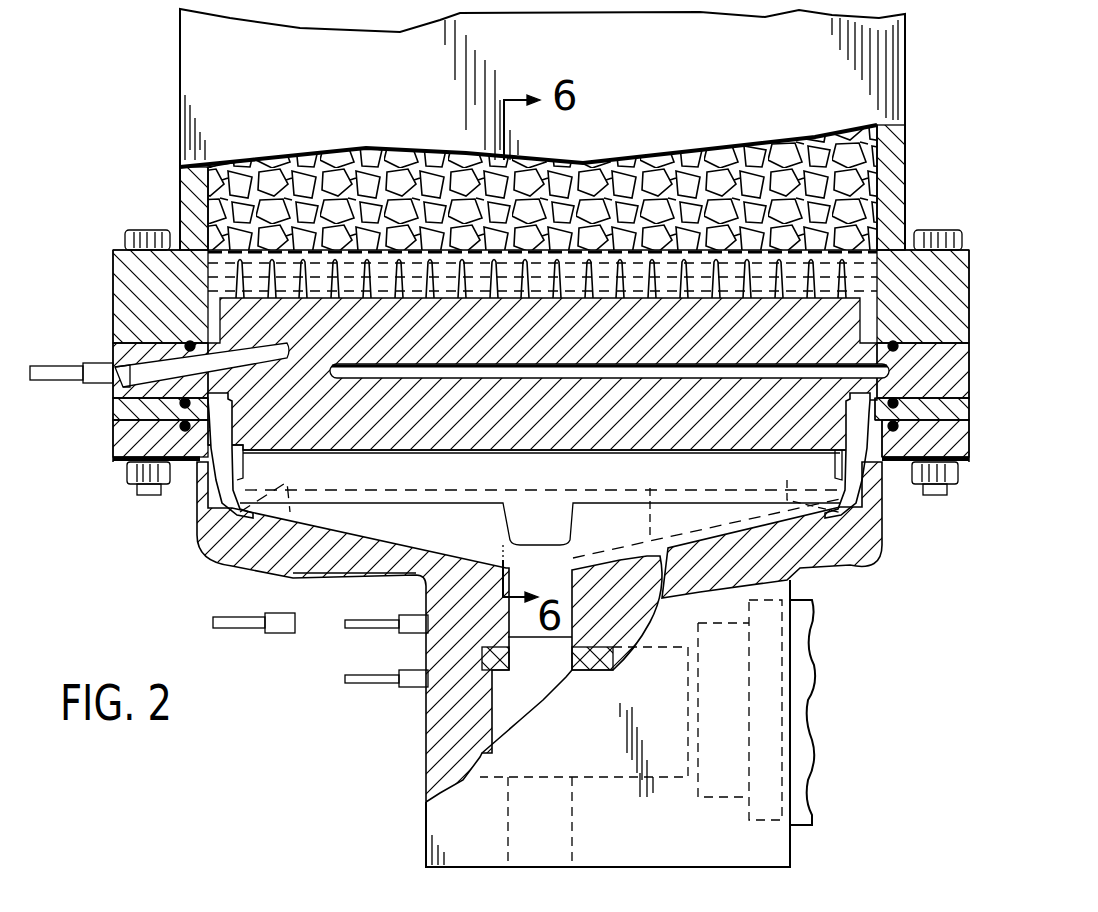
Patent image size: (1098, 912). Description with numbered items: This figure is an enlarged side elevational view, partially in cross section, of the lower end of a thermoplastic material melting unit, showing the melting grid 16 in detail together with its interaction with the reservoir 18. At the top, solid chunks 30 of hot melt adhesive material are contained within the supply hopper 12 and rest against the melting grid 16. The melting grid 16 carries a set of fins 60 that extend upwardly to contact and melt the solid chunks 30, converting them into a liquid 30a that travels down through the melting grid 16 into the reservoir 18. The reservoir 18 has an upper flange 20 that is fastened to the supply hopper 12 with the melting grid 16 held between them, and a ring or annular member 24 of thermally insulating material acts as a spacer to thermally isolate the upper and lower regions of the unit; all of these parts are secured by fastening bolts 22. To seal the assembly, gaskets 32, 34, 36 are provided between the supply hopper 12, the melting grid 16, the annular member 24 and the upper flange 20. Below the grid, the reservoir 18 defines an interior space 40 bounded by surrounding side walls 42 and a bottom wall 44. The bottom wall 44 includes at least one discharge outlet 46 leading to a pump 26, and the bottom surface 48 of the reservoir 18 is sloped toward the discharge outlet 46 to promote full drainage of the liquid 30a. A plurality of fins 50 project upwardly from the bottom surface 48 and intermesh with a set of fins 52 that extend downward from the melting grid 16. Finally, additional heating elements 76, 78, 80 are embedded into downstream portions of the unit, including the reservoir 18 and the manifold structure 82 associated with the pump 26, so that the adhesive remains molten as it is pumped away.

The supply hopper 12 is at (180, 88).
The solid chunks 30 is at (395, 148).
The fastening bolts 22 is at (147, 230).
The liquid 30a is at (870, 285).
The gasket 32 is at (895, 338).
The gasket 34 is at (895, 372).
The melting grid 16 is at (985, 360).
The annular member 24 is at (965, 412).
The upper flange 20 is at (972, 431).
The gasket 36 is at (958, 446).
The side walls 42 is at (877, 494).
The reservoir 18 is at (898, 534).
The fins 52 is at (818, 568).
The fins 50 is at (648, 488).
The bottom surface 48 is at (409, 540).
The bottom wall 44 is at (253, 573).
The heating element 78 is at (363, 617).
The heating element 76 is at (275, 635).
The heating element 80 is at (392, 690).
The manifold structure 82 is at (426, 825).
The interior space 40 is at (667, 540).
The discharge outlet 46 is at (560, 594).
The pump 26 is at (802, 825).
The fins 60 is at (690, 288).